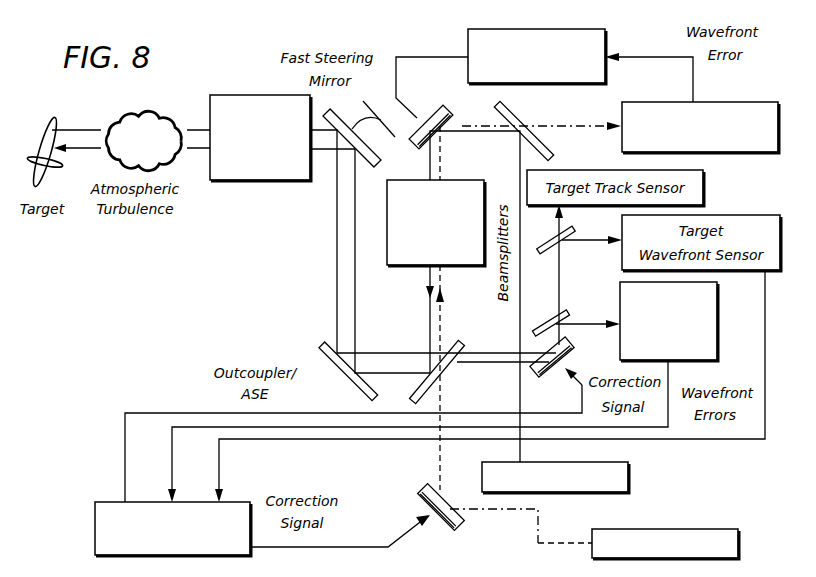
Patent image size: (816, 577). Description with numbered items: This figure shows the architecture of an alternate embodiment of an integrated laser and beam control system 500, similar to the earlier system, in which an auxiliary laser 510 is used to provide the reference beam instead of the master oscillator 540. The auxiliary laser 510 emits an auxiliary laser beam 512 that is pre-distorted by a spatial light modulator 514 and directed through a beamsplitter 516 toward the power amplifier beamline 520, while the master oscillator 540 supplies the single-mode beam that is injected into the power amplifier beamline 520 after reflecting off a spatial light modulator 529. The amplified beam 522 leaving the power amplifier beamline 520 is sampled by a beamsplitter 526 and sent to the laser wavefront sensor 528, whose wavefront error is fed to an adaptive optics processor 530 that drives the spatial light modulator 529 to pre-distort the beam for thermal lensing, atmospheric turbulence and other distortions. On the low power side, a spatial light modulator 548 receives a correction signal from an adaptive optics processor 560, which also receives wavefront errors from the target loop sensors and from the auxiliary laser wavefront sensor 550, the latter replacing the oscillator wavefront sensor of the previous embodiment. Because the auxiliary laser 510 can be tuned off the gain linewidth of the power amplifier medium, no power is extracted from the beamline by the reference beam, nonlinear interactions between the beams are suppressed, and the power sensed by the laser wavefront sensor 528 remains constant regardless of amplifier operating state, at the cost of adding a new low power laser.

The integrated laser and beam control system 500 is at (190, 310).
The auxiliary laser 510 is at (738, 543).
The auxiliary laser beam 512 is at (550, 543).
The spatial light modulator 514 is at (430, 490).
The beamsplitter 516 is at (418, 387).
The power amplifier beamline 520 is at (467, 266).
The amplified beam 522 is at (441, 158).
The beamsplitter 526 is at (520, 117).
The laser wavefront sensor 528 is at (750, 102).
The spatial light modulator 529 is at (414, 140).
The adaptive optics processor 2 530 is at (468, 43).
The master oscillator 540 is at (628, 477).
The spatial light modulator 548 is at (573, 348).
The auxiliary laser wavefront sensor 550 is at (718, 302).
The adaptive optics processor 1 560 is at (95, 527).